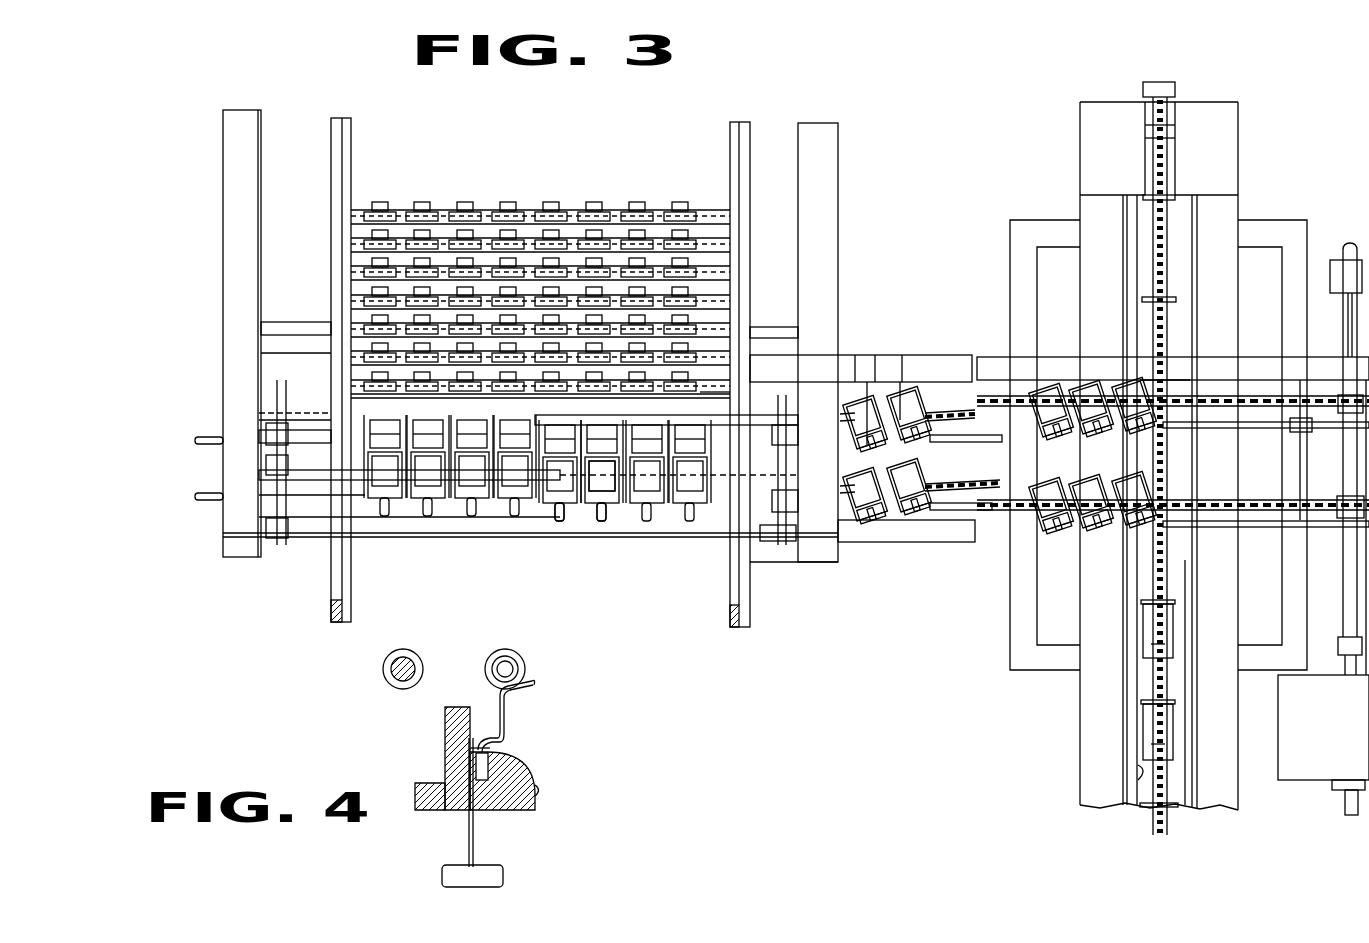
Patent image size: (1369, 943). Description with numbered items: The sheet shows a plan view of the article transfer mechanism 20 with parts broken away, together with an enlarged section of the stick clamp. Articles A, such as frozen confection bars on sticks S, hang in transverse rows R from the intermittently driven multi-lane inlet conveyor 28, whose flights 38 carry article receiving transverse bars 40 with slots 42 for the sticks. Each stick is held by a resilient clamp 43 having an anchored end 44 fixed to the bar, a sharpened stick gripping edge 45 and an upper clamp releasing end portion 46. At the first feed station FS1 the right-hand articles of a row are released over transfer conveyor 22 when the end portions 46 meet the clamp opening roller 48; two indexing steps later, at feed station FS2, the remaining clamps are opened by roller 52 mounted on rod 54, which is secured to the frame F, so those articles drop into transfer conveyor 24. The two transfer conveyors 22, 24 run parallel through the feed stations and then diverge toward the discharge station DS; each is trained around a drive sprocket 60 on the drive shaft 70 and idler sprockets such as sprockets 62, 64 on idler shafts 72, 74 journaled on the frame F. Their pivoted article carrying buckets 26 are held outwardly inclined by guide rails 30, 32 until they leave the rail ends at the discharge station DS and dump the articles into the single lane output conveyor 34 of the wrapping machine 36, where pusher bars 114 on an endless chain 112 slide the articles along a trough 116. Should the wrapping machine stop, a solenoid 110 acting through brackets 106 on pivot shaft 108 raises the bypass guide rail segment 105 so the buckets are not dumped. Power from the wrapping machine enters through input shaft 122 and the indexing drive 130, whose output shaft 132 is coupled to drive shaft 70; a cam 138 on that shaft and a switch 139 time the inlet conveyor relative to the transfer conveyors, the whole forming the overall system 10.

In FIG. 3, the frame F is at (222, 245).
In FIG. 3, the row R is at (345, 324).
In FIG. 3, the flights 38 is at (345, 268).
In FIG. 4, the flights 38 is at (410, 786).
In FIG. 3, the article receiving transverse bars 40 is at (503, 230).
In FIG. 4, the article receiving transverse bars 40 is at (440, 783).
In FIG. 3, the resilient clamps 43 is at (640, 212).
In FIG. 4, the resilient clamps 43 is at (490, 750).
In FIG. 3, the inlet conveyor 28 is at (733, 205).
In FIG. 3, the clamp opening roller 48 is at (758, 415).
In FIG. 3, the idler shaft 72 is at (796, 404).
In FIG. 3, the idler sprocket 62 is at (798, 490).
In FIG. 3, the idler sprocket 64 is at (275, 412).
In FIG. 3, the idler shaft 74 is at (275, 512).
In FIG. 3, the guide rail 30 is at (205, 437).
In FIG. 3, the guide rail 32 is at (205, 503).
In FIG. 3, the feed station FS2 is at (381, 470).
In FIG. 3, the feed station FS1 is at (718, 380).
In FIG. 3, the roller 52 is at (426, 480).
In FIG. 4, the roller 52 is at (485, 640).
In FIG. 4, the rod 54 is at (414, 667).
In FIG. 3, the article carrying buckets 26 is at (486, 490).
In FIG. 3, the sticks S is at (645, 505).
In FIG. 4, the sticks S is at (474, 830).
In FIG. 3, the articles A is at (620, 470).
In FIG. 4, the articles A is at (500, 870).
In FIG. 3, the article transfer mechanism 20 is at (865, 326).
In FIG. 3, the transfer conveyor 22 is at (945, 410).
In FIG. 3, the transfer conveyor 24 is at (950, 496).
In FIG. 3, the storage system 10 is at (1038, 422).
In FIG. 3, the wrapping machine 36 is at (1214, 784).
In FIG. 3, the output conveyor 34 is at (1152, 180).
In FIG. 3, the discharge station DS is at (1178, 378).
In FIG. 3, the endless chain 112 is at (1168, 168).
In FIG. 3, the pusher bars 114 is at (1176, 89).
In FIG. 3, the trough 116 is at (1138, 770).
In FIG. 3, the solenoid 110 is at (1173, 369).
In FIG. 3, the bypass guide rail segment 105 is at (1262, 428).
In FIG. 3, the brackets 106 is at (1296, 434).
In FIG. 3, the pivot shaft 108 is at (1346, 522).
In FIG. 3, the drive sprocket 60 is at (1350, 385).
In FIG. 3, the cam 138 is at (1340, 298).
In FIG. 3, the switch 139 is at (1338, 262).
In FIG. 3, the drive shaft 70 is at (1352, 615).
In FIG. 3, the output shaft 132 is at (1344, 670).
In FIG. 3, the indexing drive 130 is at (1343, 740).
In FIG. 3, the input shaft 122 is at (1342, 807).
In FIG. 4, the stick gripping edge 45 is at (490, 740).
In FIG. 4, the clamp releasing end portion 46 is at (533, 686).
In FIG. 4, the slots 42 is at (498, 767).
In FIG. 4, the anchored end 44 is at (540, 790).